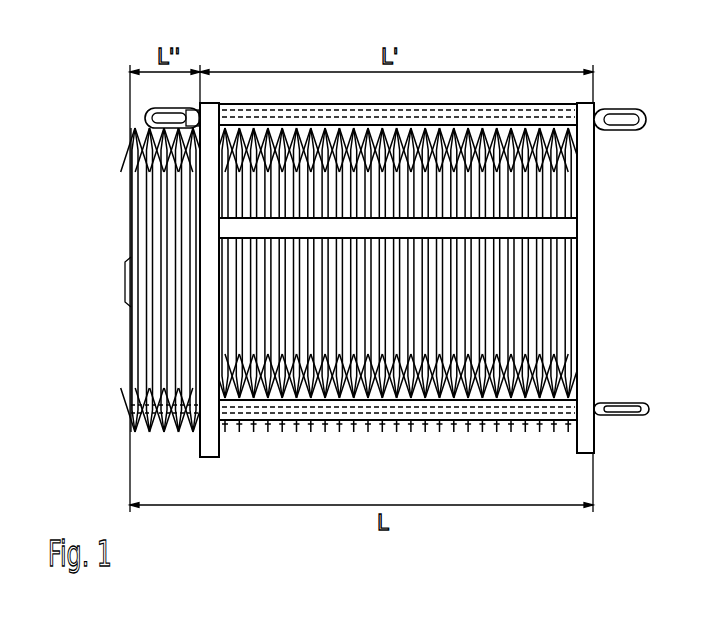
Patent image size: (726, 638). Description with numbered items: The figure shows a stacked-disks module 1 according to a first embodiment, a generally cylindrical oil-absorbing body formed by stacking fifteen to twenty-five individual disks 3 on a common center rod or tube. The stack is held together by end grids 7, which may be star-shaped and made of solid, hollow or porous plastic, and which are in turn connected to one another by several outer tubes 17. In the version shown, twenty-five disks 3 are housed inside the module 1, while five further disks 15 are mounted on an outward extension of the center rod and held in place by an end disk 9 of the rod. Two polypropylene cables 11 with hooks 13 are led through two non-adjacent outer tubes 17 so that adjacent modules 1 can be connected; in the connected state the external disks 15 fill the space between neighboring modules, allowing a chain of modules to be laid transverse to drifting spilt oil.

The module 1 is at (391, 283).
The individual disks 3 is at (426, 432).
The end grids 7 is at (583, 316).
The end disk 9 is at (124, 282).
The cables 11 is at (562, 104).
The hooks 13 is at (648, 121).
The further disks 15 is at (132, 211).
The outer tubes 17 is at (577, 228).